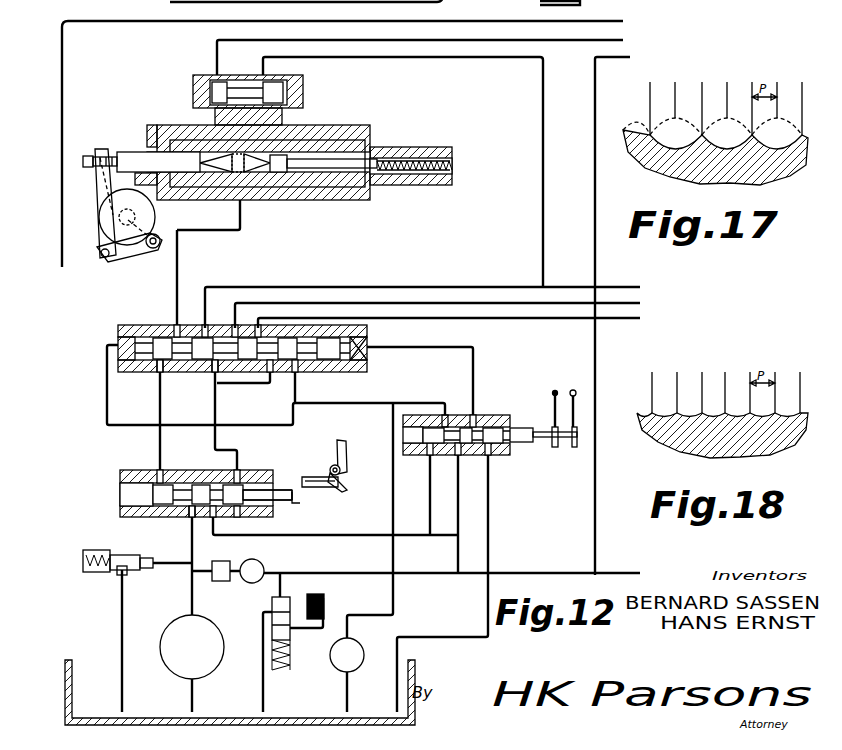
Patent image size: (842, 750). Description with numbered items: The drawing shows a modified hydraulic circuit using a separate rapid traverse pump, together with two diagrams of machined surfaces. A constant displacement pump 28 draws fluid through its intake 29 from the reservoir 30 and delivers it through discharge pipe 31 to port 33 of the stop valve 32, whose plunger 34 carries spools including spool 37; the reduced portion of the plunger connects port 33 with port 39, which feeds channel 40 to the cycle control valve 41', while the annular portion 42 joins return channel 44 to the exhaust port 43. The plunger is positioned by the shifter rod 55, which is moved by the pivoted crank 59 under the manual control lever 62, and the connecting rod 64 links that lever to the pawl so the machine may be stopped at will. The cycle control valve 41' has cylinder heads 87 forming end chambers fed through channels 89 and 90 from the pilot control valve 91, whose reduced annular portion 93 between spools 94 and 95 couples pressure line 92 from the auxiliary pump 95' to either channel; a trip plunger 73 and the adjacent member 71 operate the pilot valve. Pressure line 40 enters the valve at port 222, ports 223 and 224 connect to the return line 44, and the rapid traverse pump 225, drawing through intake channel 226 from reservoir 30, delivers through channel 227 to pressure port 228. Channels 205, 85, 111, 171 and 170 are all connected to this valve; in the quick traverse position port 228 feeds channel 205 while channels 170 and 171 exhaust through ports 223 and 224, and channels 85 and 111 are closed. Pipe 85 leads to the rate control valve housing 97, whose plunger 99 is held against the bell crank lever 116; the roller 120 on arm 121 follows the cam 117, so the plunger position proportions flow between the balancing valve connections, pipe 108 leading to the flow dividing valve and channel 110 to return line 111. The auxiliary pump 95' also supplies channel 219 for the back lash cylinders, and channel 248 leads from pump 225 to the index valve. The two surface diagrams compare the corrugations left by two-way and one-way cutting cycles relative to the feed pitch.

The channel 205 is at (167, 21).
The pipe 108 is at (392, 40).
The channel 110 is at (425, 59).
The channel 219 is at (595, 91).
The rate control valve housing 97 is at (173, 124).
The plunger 99 is at (121, 152).
The bell crank lever 116 is at (100, 183).
The cam 117 is at (150, 219).
The pipe 85 is at (242, 216).
The roller 120 is at (179, 246).
The arm 121 is at (114, 267).
The cycle control valve 41' is at (218, 334).
The cylinder heads 87 is at (118, 341).
The channel 89 is at (106, 385).
The port 222 is at (154, 372).
The port 223 is at (213, 366).
The channel 40 is at (160, 398).
The port 224 is at (243, 388).
The return channel 44 is at (217, 415).
The port 228 is at (298, 374).
The return line 111 is at (204, 300).
The channel 170 is at (235, 316).
The channel 171 is at (258, 320).
The channel 90 is at (474, 366).
The reduced annular portion 93 is at (462, 415).
The pilot control valve 91 is at (492, 415).
The trip plunger 73 is at (555, 392).
The stop pin 71 is at (574, 390).
The spool 94 is at (440, 456).
The spool 95 is at (442, 583).
The channel 92 is at (456, 557).
The exhaust port 43 is at (311, 538).
The channel 227 is at (395, 593).
The rapid traverse pump 225 is at (348, 645).
The intake channel 226 is at (348, 679).
The port 39 is at (150, 472).
The stop valve 32 is at (120, 511).
The plunger 34 is at (120, 488).
The annular portion 42 is at (226, 517).
The port 33 is at (186, 517).
The spool 37 is at (270, 505).
The shifter rod 55 is at (300, 503).
The connecting rod 64 is at (304, 477).
The manual control lever 62 is at (334, 452).
The pivoted crank 59 is at (341, 470).
The discharge pipe 31 is at (191, 596).
The pump 28 is at (170, 637).
The intake 29 is at (191, 689).
The reservoir 30 is at (66, 692).
The auxiliary pump 95' is at (228, 581).
The channel 248 is at (612, 573).